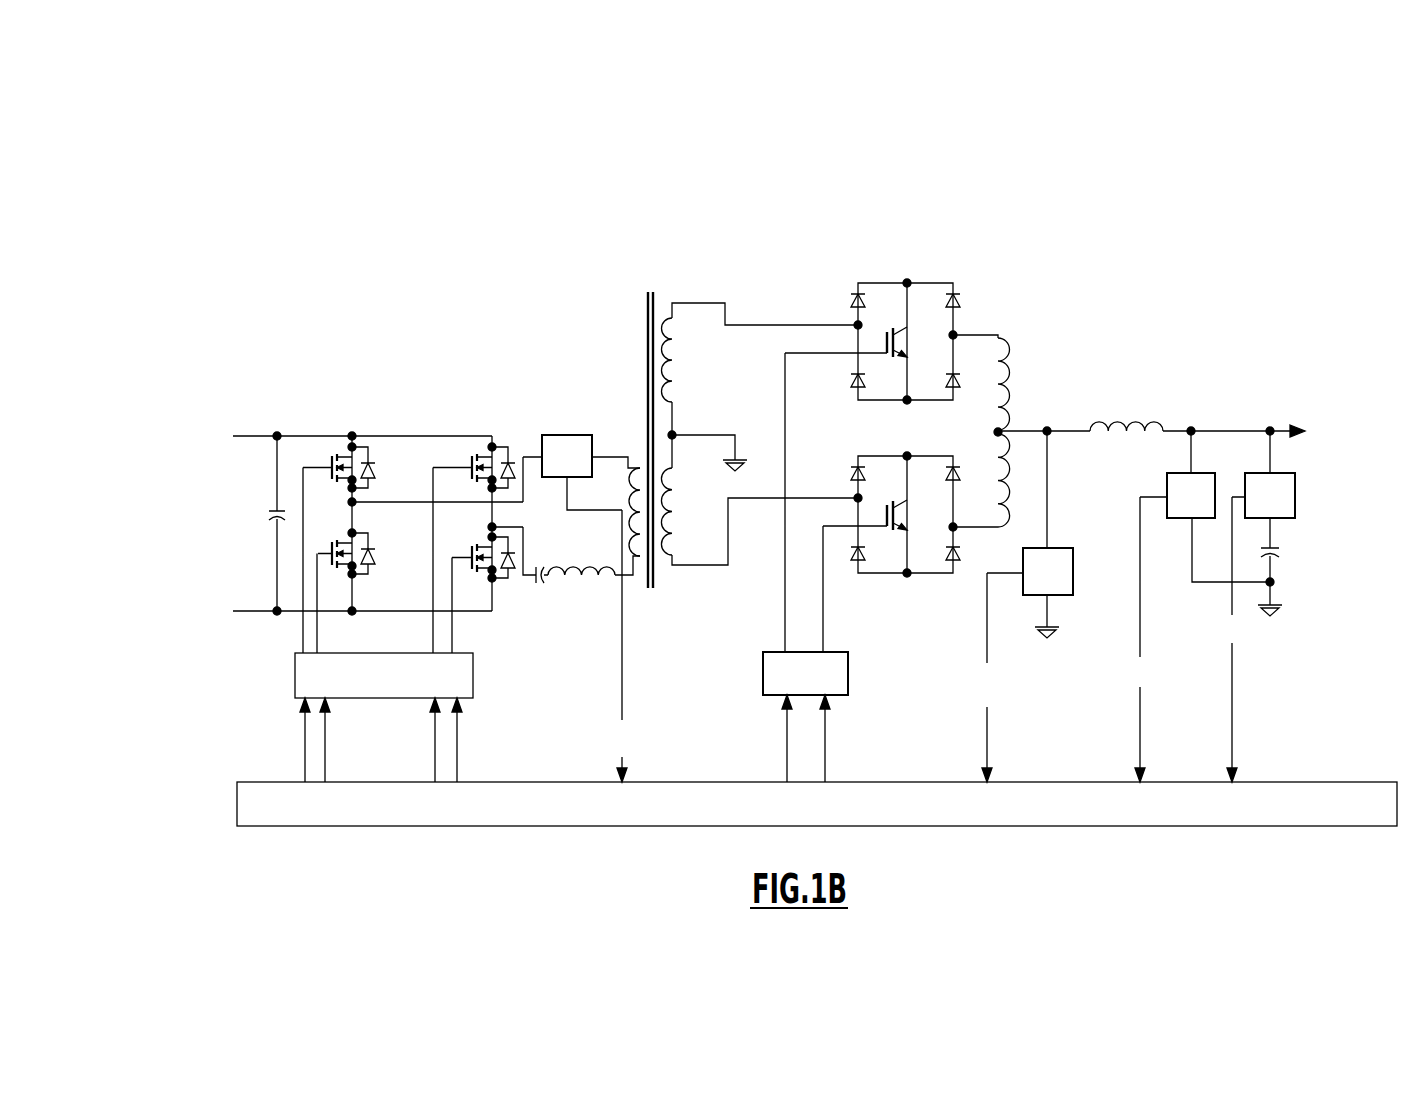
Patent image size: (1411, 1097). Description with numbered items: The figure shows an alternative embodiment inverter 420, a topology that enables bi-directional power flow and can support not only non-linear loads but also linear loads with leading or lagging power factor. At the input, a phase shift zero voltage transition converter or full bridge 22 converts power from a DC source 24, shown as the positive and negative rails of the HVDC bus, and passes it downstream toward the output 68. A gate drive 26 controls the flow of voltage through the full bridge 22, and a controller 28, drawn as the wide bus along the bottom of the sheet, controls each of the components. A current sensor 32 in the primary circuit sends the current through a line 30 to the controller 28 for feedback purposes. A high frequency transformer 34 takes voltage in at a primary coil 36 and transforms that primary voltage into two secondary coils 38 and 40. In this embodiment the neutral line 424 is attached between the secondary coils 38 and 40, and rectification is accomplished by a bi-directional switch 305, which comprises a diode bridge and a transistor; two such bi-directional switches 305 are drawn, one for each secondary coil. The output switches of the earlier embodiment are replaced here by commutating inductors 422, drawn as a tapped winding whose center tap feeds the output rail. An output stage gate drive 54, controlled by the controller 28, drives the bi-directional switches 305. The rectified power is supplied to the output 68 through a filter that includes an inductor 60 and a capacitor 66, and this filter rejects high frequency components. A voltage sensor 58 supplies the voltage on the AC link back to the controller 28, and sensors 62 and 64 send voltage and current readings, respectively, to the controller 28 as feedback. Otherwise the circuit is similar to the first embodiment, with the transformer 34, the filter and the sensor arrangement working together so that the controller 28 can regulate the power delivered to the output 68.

The inverter 420 is at (412, 210).
The full bridge 22 is at (384, 413).
The DC source 24 is at (250, 445).
The gate drive 26 is at (295, 673).
The controller 28 is at (247, 810).
The line 30 is at (622, 690).
The current sensor 32 is at (563, 435).
The high frequency transformer 34 is at (690, 443).
The primary coil 36 is at (634, 468).
The secondary coil 38 is at (690, 303).
The secondary coil 40 is at (698, 566).
The neutral line 424 is at (692, 434).
The bidirectional switch 305 is at (882, 271).
The commutating inductors 422 is at (1000, 468).
The output stage gate drive 54 is at (763, 667).
The voltage sensor 58 is at (1073, 560).
The inductor 60 is at (1153, 420).
The sensor 62 is at (1167, 487).
The sensor 64 is at (1295, 490).
The capacitor 66 is at (1282, 555).
The output 68 is at (1272, 428).